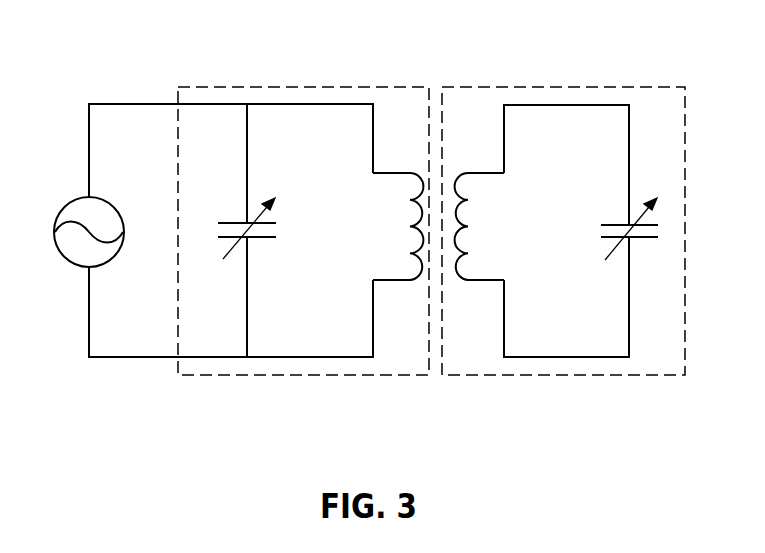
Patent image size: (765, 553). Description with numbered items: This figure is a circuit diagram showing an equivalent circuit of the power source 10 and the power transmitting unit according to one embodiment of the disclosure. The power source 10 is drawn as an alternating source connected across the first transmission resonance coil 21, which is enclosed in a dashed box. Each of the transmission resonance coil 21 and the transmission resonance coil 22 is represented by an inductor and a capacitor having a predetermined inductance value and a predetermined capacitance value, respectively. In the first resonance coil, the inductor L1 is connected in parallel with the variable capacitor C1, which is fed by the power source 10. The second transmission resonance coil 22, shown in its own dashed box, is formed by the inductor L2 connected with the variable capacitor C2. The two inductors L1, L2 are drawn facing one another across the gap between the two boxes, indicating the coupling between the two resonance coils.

The power source 10 is at (68, 205).
The transmission resonance coil 21 is at (341, 87).
The transmission resonance coil 22 is at (503, 87).
The capacitor C1 is at (232, 228).
The inductor L1 is at (380, 227).
The inductor L2 is at (495, 227).
The capacitor C2 is at (636, 235).